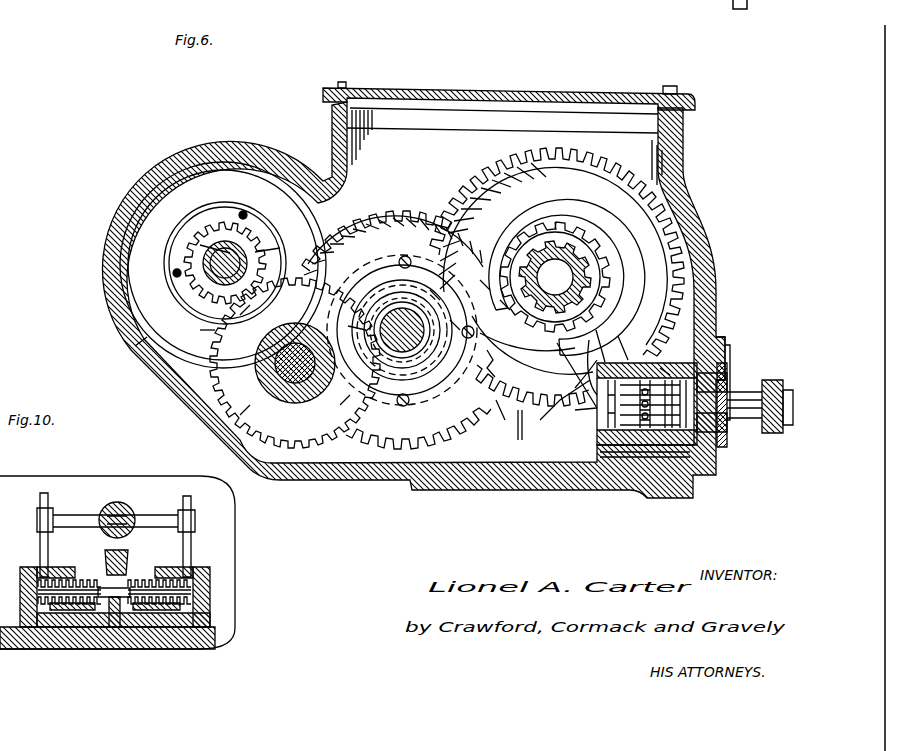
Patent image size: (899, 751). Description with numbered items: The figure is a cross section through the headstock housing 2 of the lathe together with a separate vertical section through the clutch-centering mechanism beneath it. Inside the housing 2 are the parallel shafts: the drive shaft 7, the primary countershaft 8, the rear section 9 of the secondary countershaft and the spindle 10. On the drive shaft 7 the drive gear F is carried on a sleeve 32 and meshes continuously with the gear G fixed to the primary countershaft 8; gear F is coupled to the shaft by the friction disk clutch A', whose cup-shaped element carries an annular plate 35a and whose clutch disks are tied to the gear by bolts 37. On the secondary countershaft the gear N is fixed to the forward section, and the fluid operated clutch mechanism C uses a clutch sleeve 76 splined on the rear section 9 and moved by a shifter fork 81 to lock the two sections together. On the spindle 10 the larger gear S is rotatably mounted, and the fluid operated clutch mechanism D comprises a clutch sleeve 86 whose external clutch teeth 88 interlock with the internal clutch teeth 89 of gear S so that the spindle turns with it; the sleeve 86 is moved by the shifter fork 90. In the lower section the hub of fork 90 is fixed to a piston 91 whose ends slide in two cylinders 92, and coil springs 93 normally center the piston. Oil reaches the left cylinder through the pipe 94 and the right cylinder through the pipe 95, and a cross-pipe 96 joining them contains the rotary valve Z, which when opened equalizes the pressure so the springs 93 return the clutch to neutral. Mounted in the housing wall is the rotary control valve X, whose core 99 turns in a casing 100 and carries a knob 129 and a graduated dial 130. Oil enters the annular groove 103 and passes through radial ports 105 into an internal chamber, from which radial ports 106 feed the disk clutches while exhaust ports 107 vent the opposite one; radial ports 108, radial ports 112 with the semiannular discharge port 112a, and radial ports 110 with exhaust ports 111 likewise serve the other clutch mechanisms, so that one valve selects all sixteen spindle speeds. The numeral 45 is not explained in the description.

In FIG. 6, the headstock housing 2 is at (150, 345).
In FIG. 10, the headstock housing 2 is at (198, 490).
In FIG. 6, the friction disk clutch A' is at (223, 241).
In FIG. 6, the annular plate 35a is at (225, 257).
In FIG. 6, the drive gear F is at (222, 225).
In FIG. 6, the sleeve 32 is at (240, 250).
In FIG. 6, the drive shaft 7 is at (205, 272).
In FIG. 6, the bolts 37 is at (245, 212).
In FIG. 6, the teeth 45 is at (200, 245).
In FIG. 6, the gear G is at (215, 332).
In FIG. 6, the primary countershaft 8 is at (255, 360).
In FIG. 6, the gear N is at (395, 225).
In FIG. 6, the fluid operated clutch mechanism C is at (418, 290).
In FIG. 6, the clutch sleeve 76 is at (395, 282).
In FIG. 6, the rear section of secondary countershaft 9 is at (350, 324).
In FIG. 6, the gear S is at (505, 162).
In FIG. 6, the clutch sleeve 86 is at (512, 250).
In FIG. 6, the shifter fork 90 is at (612, 250).
In FIG. 10, the shifter fork 90 is at (130, 555).
In FIG. 6, the external clutch teeth 88 is at (570, 222).
In FIG. 6, the internal clutch teeth 89 is at (557, 222).
In FIG. 6, the fluid operated clutch mechanism D is at (600, 236).
In FIG. 6, the spindle 10 is at (588, 268).
In FIG. 6, the radial ports 105 is at (630, 360).
In FIG. 6, the radial ports 106 is at (590, 340).
In FIG. 6, the exhaust ports 107 is at (580, 376).
In FIG. 6, the rotary control valve X is at (538, 393).
In FIG. 6, the radial ports 112 is at (574, 410).
In FIG. 6, the shifter fork 81 is at (508, 420).
In FIG. 6, the radial ports 108 is at (598, 440).
In FIG. 6, the cylinders 92 is at (612, 430).
In FIG. 10, the cylinders 92 is at (62, 578).
In FIG. 6, the annular groove 103 is at (645, 440).
In FIG. 6, the valve core 99 is at (668, 440).
In FIG. 6, the radial ports 110 is at (656, 330).
In FIG. 6, the exhaust ports 111 is at (717, 340).
In FIG. 6, the casing 100 is at (724, 350).
In FIG. 6, the semiannular discharge port 112a is at (677, 360).
In FIG. 6, the knob 129 is at (770, 380).
In FIG. 6, the dial 130 is at (727, 378).
In FIG. 10, the rotary valve Z is at (118, 502).
In FIG. 10, the cross-pipe 96 is at (150, 516).
In FIG. 10, the pipe 94 is at (50, 495).
In FIG. 10, the pipe 95 is at (192, 548).
In FIG. 10, the coil springs 93 is at (75, 577).
In FIG. 10, the piston 91 is at (128, 588).